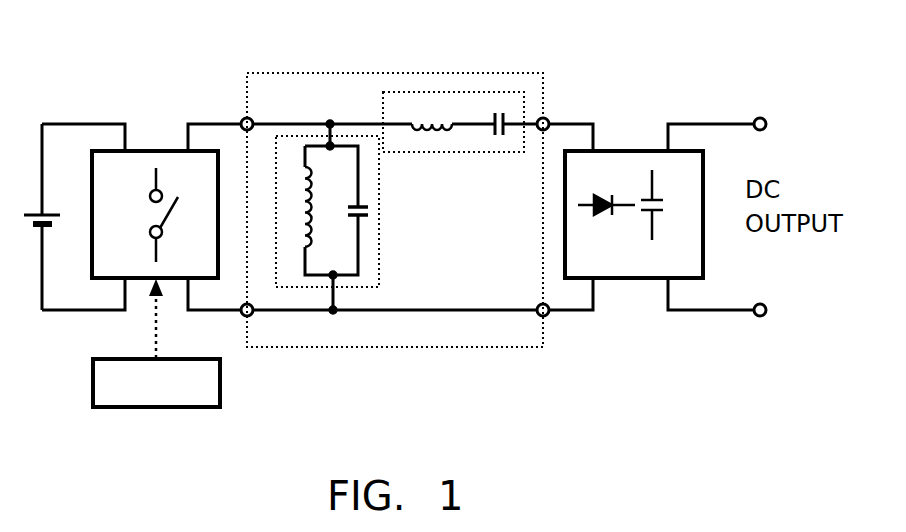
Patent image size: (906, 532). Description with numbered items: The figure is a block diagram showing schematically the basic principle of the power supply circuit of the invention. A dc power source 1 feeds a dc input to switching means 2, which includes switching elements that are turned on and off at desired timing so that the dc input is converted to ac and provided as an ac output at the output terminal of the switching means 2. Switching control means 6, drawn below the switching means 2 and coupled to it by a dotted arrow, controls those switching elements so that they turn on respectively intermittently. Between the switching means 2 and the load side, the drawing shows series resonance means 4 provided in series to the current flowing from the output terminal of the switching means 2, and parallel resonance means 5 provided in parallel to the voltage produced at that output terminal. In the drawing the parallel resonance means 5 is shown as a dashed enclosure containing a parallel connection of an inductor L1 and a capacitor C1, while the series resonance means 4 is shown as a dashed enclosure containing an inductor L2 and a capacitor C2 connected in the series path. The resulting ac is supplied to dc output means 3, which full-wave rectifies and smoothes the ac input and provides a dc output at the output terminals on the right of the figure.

The dc power source 1 is at (33, 229).
The switching means 2 is at (170, 151).
The dc output means 3 is at (637, 278).
The series resonance means 4 is at (411, 113).
The parallel resonance means 5 is at (395, 210).
The switching control means 6 is at (220, 383).
The parallel inductor L1 is at (312, 222).
The parallel capacitor C1 is at (370, 211).
The series inductor L2 is at (430, 120).
The series capacitor C2 is at (500, 110).